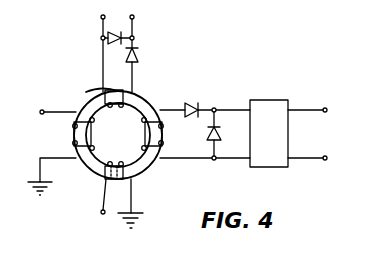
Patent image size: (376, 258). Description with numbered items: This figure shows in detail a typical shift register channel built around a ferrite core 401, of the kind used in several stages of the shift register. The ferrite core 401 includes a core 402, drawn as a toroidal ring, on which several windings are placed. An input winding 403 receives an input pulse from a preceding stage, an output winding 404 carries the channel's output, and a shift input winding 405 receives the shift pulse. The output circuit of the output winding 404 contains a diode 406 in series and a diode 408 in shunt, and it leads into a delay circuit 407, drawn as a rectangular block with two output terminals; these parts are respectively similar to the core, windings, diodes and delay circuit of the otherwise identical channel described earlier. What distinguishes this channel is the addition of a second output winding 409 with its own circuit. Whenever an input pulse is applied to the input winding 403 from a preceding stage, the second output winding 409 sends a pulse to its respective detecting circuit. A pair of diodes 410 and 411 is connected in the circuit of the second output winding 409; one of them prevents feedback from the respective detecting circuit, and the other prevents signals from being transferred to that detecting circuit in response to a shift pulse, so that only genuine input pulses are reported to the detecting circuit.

The ferrite core 401 is at (153, 98).
The core 402 is at (93, 100).
The input winding 403 is at (72, 110).
The output winding 404 is at (172, 112).
The shift input winding 405 is at (99, 199).
The diode 406 is at (199, 106).
The delay circuit 407 is at (254, 100).
The diode 408 is at (215, 142).
The second output winding 409 is at (135, 78).
The diode 410 is at (129, 35).
The diode 411 is at (138, 58).